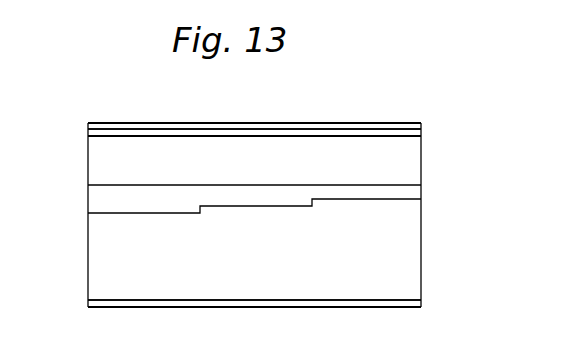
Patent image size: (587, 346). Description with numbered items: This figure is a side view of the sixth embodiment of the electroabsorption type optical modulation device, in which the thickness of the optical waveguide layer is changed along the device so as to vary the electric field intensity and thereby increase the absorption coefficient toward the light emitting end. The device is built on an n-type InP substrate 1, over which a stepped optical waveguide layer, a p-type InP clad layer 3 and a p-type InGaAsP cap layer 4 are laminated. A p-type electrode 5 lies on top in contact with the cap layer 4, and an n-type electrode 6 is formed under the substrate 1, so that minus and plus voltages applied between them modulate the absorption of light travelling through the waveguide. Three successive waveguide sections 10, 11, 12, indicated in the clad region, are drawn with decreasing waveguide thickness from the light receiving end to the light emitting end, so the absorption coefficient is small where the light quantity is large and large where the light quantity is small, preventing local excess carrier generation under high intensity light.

The n-type InP substrate 1 is at (274, 249).
The p-type InP clad layer 3 is at (274, 161).
The p-type InGaAsP cap layer 4 is at (273, 140).
The p-type electrode 5 is at (273, 119).
The n-type electrode 6 is at (273, 306).
The first region 10 is at (133, 190).
The second region 11 is at (246, 190).
The third region 12 is at (356, 190).